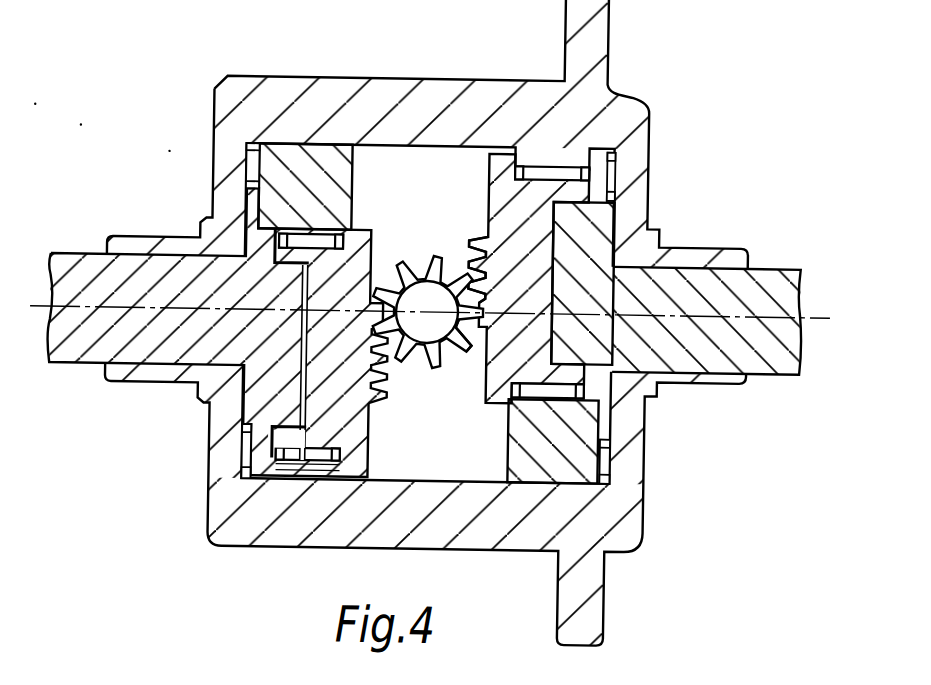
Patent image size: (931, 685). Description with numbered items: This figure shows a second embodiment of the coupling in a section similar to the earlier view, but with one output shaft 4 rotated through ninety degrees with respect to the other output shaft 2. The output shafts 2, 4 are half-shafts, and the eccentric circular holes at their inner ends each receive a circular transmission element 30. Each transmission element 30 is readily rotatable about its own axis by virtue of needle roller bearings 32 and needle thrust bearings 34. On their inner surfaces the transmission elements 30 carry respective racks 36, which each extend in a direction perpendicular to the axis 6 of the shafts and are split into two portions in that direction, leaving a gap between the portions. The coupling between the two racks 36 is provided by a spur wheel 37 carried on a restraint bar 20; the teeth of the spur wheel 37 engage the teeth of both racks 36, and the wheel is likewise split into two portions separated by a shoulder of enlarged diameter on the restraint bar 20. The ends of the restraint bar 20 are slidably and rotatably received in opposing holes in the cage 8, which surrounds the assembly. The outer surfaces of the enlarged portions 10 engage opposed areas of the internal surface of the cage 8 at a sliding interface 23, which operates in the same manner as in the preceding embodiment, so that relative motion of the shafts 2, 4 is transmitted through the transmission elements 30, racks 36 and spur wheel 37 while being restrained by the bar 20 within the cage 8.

The output shaft 2 is at (740, 291).
The output shaft 4 is at (98, 262).
The axis 6 is at (815, 312).
The cage 8 is at (432, 113).
The enlarged portions 10 is at (303, 178).
The restraint bar 20 is at (418, 296).
The sliding interface 23 is at (324, 458).
The transmission elements 30 is at (533, 198).
The needle roller bearings 32 is at (288, 474).
The needle thrust bearings 34 is at (606, 176).
The racks 36 is at (468, 252).
The spur wheel 37 is at (459, 345).